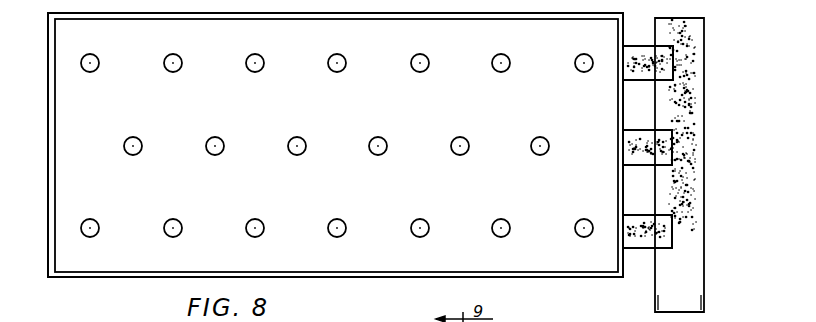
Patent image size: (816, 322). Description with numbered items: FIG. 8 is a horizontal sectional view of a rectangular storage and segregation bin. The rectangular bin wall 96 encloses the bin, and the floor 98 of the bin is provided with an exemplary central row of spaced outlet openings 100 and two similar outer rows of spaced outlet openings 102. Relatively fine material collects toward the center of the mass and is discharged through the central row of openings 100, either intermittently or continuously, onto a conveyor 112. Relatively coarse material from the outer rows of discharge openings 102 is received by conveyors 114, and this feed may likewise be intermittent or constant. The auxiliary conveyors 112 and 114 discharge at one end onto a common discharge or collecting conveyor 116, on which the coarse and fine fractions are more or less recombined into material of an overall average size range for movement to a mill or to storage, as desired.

The rectangular bin wall 96 is at (92, 278).
The floor 98 is at (60, 173).
The central row of spaced outlet openings 100 is at (221, 152).
The outer rows of spaced outlet openings 102 is at (97, 69).
The conveyor 112 is at (643, 158).
The conveyors 114 is at (646, 74).
The common discharge or collecting conveyor 116 is at (690, 148).